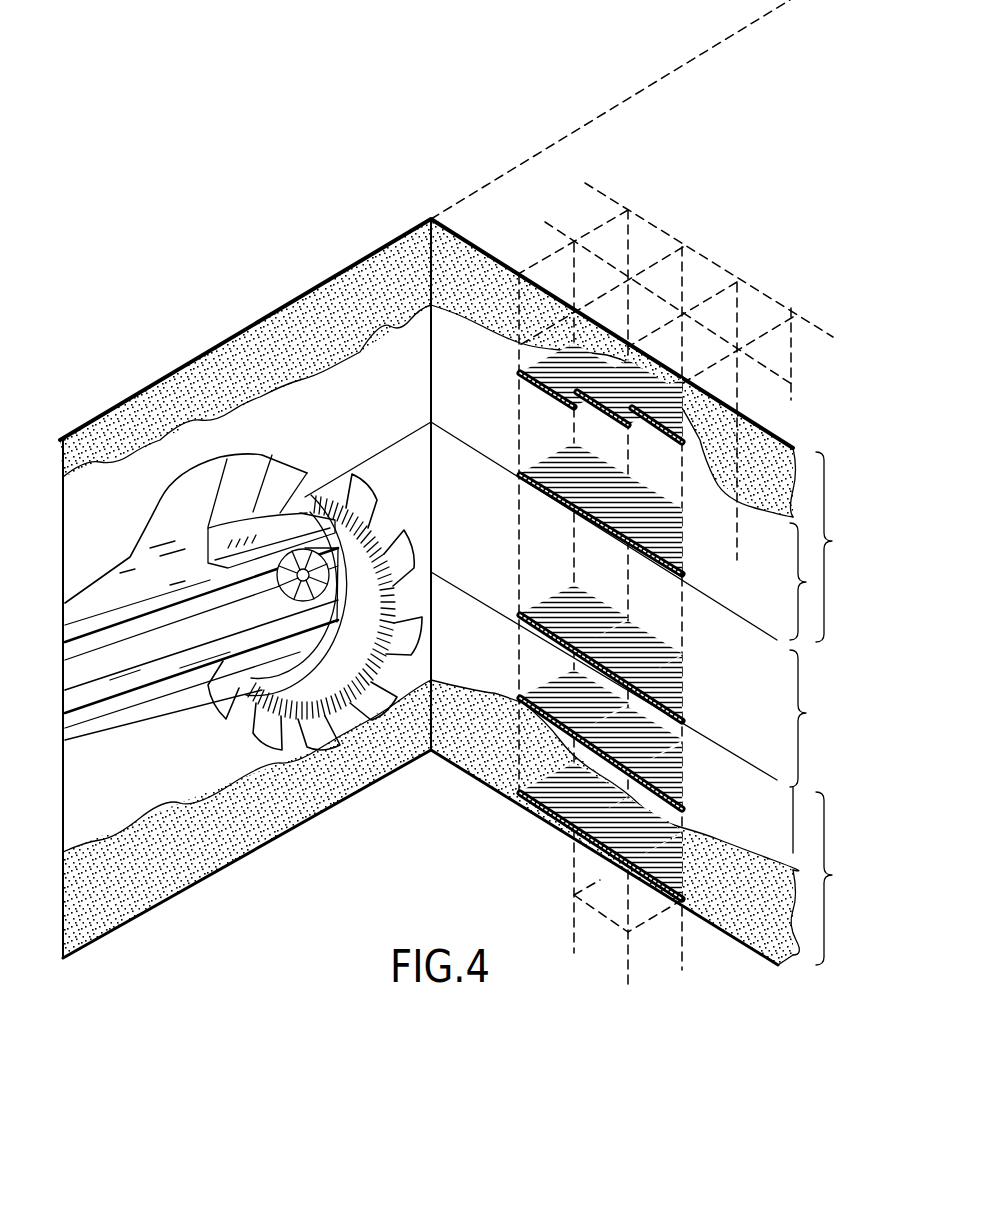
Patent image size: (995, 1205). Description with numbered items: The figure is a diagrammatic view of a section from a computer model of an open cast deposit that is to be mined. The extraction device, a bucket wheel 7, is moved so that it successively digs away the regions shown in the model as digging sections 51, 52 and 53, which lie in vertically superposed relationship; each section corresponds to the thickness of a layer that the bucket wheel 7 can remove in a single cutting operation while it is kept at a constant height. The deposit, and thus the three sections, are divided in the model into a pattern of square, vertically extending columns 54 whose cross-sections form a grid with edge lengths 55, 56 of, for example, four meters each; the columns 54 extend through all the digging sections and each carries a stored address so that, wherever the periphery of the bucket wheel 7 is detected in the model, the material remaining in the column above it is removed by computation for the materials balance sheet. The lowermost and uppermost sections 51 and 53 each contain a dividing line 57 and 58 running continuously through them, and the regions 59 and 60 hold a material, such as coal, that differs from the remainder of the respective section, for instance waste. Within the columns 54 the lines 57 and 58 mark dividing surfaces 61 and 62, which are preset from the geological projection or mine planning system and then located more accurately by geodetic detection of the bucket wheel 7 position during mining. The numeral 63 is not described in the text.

The bucket wheel 7 is at (308, 690).
The digging section 51 is at (826, 876).
The digging section 52 is at (632, 679).
The digging section 53 is at (583, 532).
The vertically extending columns 54 is at (727, 293).
The edge length 55 is at (763, 297).
The edge length 56 is at (763, 332).
The dividing line 57 is at (493, 693).
The dividing line 58 is at (480, 325).
The region of differing material 59 is at (793, 907).
The region of differing material 60 is at (797, 487).
The dividing surface 61 is at (540, 707).
The dividing surface 62 is at (718, 398).
The cut slab 63 is at (687, 563).